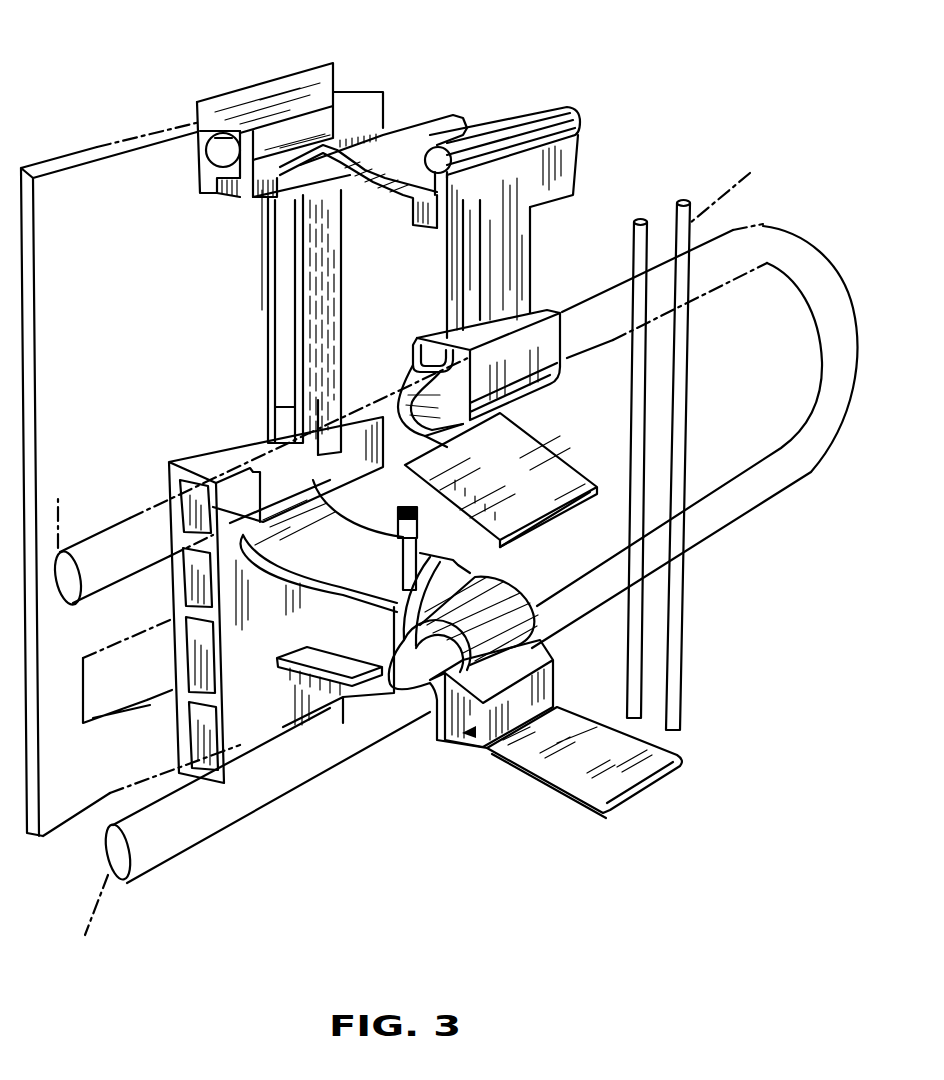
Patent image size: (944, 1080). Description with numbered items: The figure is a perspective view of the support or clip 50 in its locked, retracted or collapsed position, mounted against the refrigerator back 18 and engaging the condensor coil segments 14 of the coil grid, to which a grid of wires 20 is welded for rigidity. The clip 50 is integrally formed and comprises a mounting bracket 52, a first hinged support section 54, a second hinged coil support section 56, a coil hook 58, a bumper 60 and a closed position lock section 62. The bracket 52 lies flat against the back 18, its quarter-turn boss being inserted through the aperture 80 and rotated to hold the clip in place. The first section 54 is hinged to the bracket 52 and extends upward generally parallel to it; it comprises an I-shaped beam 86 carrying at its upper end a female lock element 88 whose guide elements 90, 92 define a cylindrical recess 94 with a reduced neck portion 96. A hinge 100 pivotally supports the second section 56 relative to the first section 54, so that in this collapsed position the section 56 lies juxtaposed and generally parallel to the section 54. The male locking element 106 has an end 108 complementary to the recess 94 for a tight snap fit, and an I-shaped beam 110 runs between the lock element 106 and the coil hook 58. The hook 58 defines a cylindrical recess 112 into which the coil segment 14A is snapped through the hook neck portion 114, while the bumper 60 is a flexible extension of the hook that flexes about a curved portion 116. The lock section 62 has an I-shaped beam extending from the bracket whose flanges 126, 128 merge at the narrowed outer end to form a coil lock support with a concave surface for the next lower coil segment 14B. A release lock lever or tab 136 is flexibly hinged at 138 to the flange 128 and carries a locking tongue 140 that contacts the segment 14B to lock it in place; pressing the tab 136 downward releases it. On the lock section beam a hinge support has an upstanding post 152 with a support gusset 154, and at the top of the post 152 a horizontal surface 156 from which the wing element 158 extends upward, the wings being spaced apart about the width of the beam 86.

The condensor coil segment 14 is at (797, 290).
The coil segment 14A is at (260, 482).
The coil segment 14B is at (250, 839).
The refrigerator back 18 is at (98, 152).
The grid of wires 20 is at (740, 183).
The support or clip 50 is at (598, 101).
The mounting bracket 52 is at (236, 794).
The first hinged support section 54 is at (268, 326).
The second hinged coil support section 56 is at (532, 241).
The coil hook 58 is at (570, 354).
The bumper 60 is at (576, 465).
The closed position lock section 62 is at (303, 622).
The aperture 80 is at (143, 708).
The beam 86 is at (268, 390).
The female lock element 88 is at (247, 200).
The guide element 90 is at (193, 100).
The guide element 92 is at (365, 94).
The cylindrical recess 94 is at (220, 157).
The reduced neck portion 96 is at (228, 137).
The hinge 100 is at (453, 115).
The male locking element 106 is at (567, 165).
The end of male locking element 108 is at (547, 107).
The I-shaped beam 110 is at (517, 275).
The cylindrical recess 112 is at (438, 336).
The hook neck portion 114 is at (412, 398).
The curved portion 116 is at (420, 430).
The flange 126 is at (560, 592).
The flange 128 is at (430, 710).
The release lock lever or tab 136 is at (655, 783).
The hinge 138 is at (453, 752).
The locking tongue 140 is at (553, 655).
The upstanding post 152 is at (316, 603).
The support gusset 154 is at (398, 558).
The horizontal surface 156 is at (467, 500).
The wing element 158 is at (415, 632).